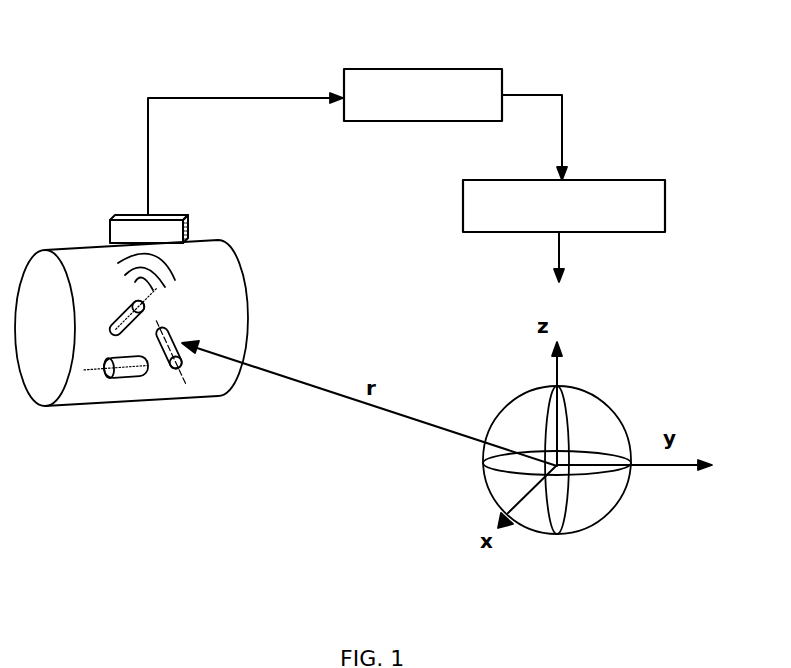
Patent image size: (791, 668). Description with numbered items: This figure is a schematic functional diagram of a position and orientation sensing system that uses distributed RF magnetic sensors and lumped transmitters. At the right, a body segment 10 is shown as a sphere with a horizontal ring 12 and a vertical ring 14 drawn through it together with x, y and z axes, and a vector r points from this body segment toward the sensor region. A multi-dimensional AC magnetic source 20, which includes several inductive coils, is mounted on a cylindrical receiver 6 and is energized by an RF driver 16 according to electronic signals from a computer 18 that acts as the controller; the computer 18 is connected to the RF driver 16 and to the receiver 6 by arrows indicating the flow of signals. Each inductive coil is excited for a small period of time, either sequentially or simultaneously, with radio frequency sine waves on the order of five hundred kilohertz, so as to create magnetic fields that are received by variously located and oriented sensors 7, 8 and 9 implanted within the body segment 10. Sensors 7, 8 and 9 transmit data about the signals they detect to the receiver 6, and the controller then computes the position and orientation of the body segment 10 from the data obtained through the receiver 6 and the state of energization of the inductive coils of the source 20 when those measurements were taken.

The receiver 6 is at (247, 285).
The sensor 7 is at (105, 322).
The sensor 8 is at (103, 378).
The sensor 9 is at (173, 368).
The body segment 10 is at (613, 505).
The horizontal ring 12 is at (598, 452).
The vertical ring 14 is at (568, 415).
The RF driver 16 is at (595, 180).
The computer 18 is at (450, 69).
The multi-dimensional AC magnetic source 20 is at (155, 207).